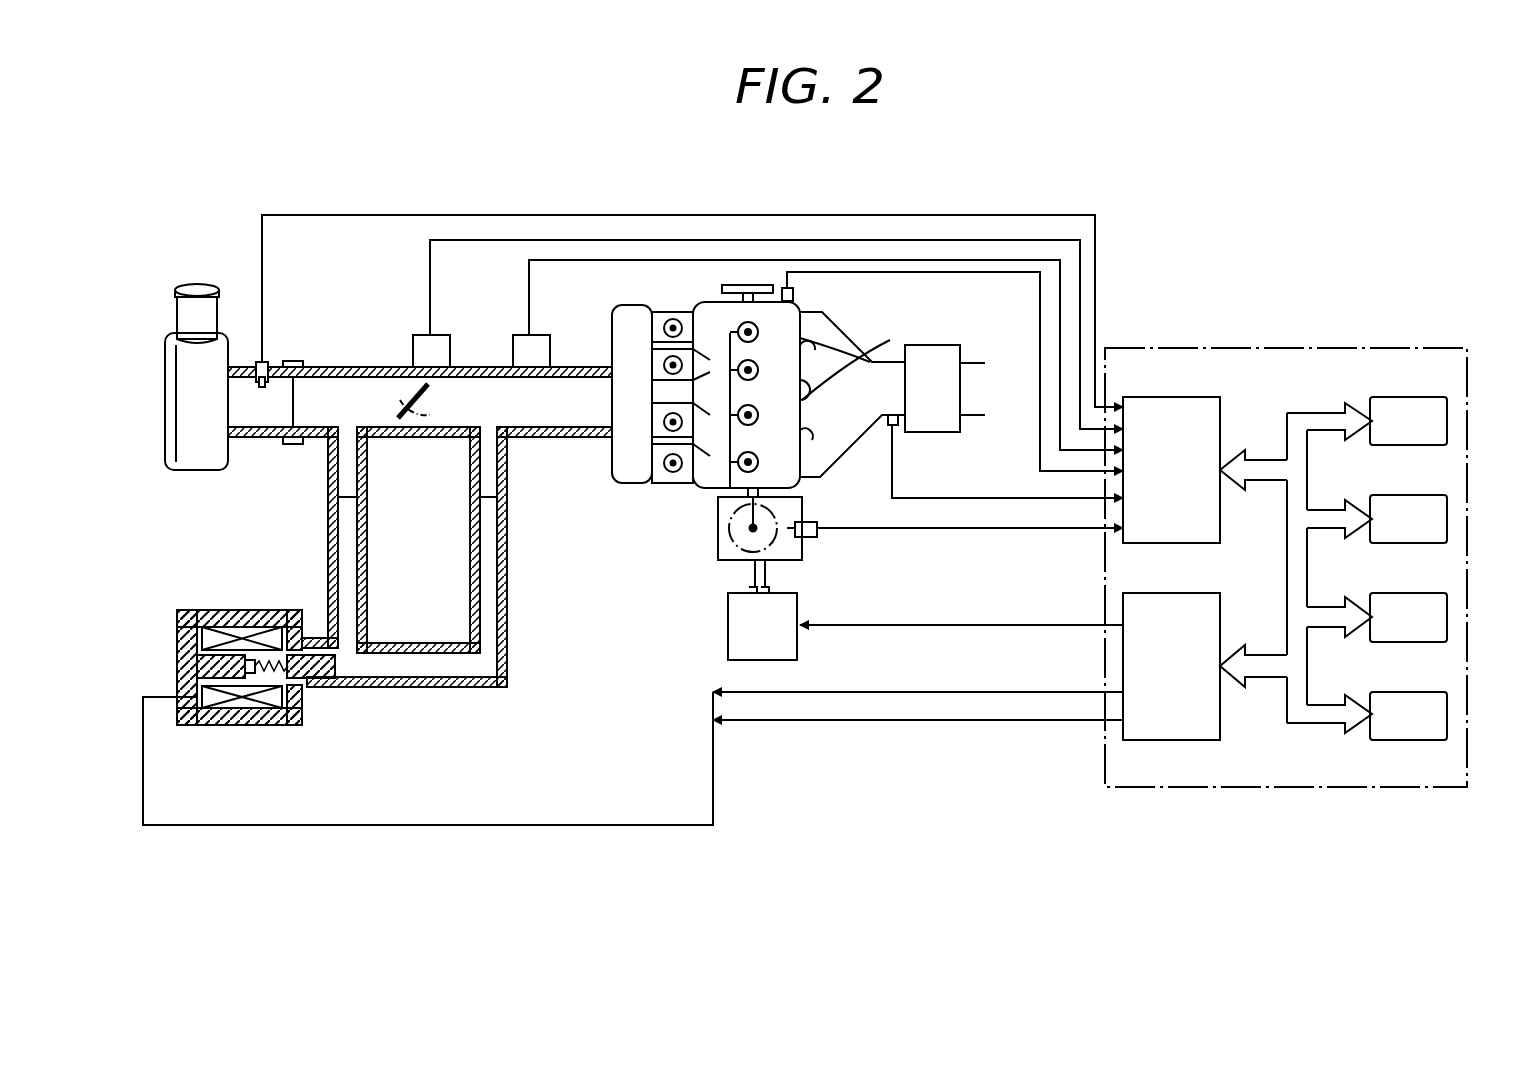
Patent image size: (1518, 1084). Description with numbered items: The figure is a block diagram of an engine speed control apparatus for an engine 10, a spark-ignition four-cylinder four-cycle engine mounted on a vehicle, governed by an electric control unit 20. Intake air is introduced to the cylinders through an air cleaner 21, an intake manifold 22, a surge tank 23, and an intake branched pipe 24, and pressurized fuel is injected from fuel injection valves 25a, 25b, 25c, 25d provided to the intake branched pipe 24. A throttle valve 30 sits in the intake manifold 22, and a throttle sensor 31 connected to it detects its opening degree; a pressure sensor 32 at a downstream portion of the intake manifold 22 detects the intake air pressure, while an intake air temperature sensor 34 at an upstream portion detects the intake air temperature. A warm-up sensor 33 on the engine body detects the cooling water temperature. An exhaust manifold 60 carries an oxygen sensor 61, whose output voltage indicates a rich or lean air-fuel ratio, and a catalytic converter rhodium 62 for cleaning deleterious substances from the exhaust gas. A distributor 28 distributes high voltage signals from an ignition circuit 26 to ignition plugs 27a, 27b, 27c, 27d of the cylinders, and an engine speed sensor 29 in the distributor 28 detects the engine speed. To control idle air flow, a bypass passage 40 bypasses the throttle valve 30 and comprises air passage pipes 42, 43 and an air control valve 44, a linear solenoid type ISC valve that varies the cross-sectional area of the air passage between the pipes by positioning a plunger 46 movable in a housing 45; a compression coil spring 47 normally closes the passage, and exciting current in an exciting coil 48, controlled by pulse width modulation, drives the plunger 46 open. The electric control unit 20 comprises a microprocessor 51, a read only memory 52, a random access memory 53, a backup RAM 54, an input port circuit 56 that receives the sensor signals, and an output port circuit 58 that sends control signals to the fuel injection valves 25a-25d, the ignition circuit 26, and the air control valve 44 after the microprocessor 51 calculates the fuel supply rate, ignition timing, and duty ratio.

The engine 10 is at (712, 302).
The electric control unit 20 is at (1445, 346).
The air cleaner 21 is at (236, 335).
The intake manifold 22 is at (338, 366).
The surge tank 23 is at (612, 318).
The intake branched pipe 24 is at (655, 425).
The fuel injection valve 25a is at (673, 473).
The fuel injection valve 25b is at (668, 432).
The fuel injection valve 25c is at (667, 360).
The fuel injection valve 25d is at (666, 322).
The ignition circuit 26 is at (797, 607).
The ignition plug 27a is at (758, 465).
The ignition plug 27b is at (758, 412).
The ignition plug 27c is at (758, 372).
The ignition plug 27d is at (758, 330).
The distributor 28 is at (802, 503).
The engine speed sensor 29 is at (818, 536).
The throttle valve 30 is at (405, 395).
The throttle sensor 31 is at (436, 335).
The pressure sensor 32 is at (520, 335).
The warm-up sensor 33 is at (787, 288).
The intake air temperature sensor 34 is at (268, 360).
The bypass passage 40 is at (428, 643).
The air passage pipe 42 is at (328, 515).
The air passage pipe 43 is at (507, 515).
The air control valve 44 is at (290, 610).
The housing 45 is at (370, 688).
The plunger 46 is at (330, 680).
The compression coil spring 47 is at (275, 680).
The exciting coil 48 is at (240, 700).
The microprocessor 51 is at (1415, 397).
The read only memory 52 is at (1415, 495).
The random access memory 53 is at (1415, 593).
The backup RAM 54 is at (1415, 692).
The input port circuit 56 is at (1180, 397).
The output port circuit 58 is at (1175, 593).
The exhaust manifold 60 is at (880, 335).
The oxygen sensor 61 is at (897, 428).
The catalytic converter rhodium 62 is at (945, 345).